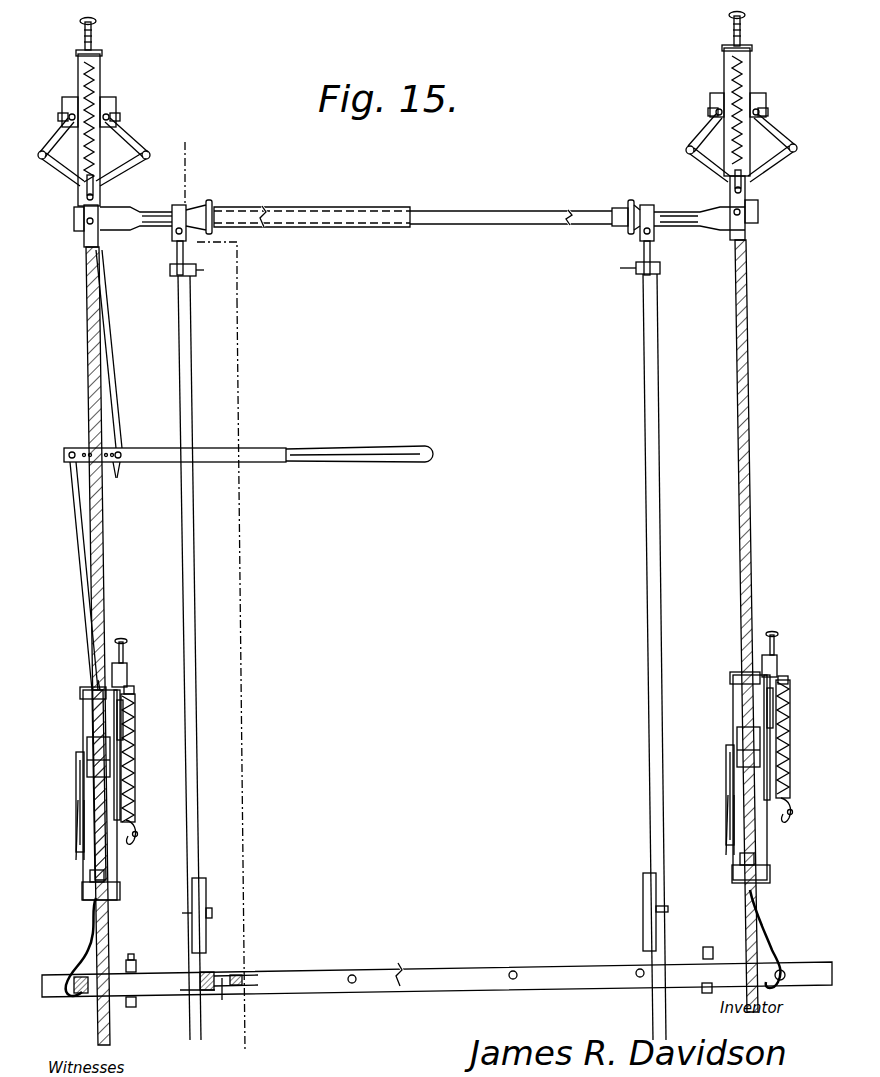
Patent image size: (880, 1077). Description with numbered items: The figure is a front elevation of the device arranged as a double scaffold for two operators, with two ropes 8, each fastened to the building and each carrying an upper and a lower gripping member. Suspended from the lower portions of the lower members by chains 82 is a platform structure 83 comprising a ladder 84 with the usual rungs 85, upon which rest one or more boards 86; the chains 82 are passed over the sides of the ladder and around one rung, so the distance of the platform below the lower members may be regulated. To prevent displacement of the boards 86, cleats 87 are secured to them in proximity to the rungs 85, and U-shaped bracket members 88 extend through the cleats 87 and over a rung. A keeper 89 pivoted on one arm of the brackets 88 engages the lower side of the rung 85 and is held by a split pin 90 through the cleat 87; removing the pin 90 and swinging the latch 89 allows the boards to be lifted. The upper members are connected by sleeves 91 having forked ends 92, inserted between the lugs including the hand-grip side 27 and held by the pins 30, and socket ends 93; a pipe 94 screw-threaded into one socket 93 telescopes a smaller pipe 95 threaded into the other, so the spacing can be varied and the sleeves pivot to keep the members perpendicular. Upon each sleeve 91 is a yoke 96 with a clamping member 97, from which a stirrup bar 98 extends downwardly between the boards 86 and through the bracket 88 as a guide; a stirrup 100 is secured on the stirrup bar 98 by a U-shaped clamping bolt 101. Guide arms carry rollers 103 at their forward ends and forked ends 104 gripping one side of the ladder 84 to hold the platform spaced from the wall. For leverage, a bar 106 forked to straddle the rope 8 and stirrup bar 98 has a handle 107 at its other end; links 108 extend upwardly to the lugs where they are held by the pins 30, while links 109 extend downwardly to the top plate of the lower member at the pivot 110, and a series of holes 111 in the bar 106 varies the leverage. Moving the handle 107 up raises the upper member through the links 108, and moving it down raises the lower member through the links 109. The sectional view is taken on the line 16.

The rope 8 is at (84, 343).
The common pin 16 is at (215, 152).
The side of frame 27 is at (84, 244).
The bolts 30 is at (86, 221).
The chains 82 is at (90, 923).
The platform structure 83 is at (446, 966).
The ladder 84 is at (466, 987).
The rungs 85 is at (354, 974).
The boards 86 is at (158, 973).
The cleats 87 is at (258, 975).
The bracket members 88 is at (208, 972).
The keeper 89 is at (182, 995).
The split pin 90 is at (226, 1000).
The sleeves 91 is at (152, 210).
The forked ends 92 is at (76, 228).
The socket ends 93 is at (205, 210).
The pipe 94 is at (345, 208).
The smaller pipe 95 is at (500, 210).
The yoke 96 is at (172, 236).
The clamping member 97 is at (177, 263).
The stirrup bar 98 is at (196, 272).
The stirrup 100 is at (206, 900).
The U-shaped clamping bolt 101 is at (182, 913).
The rollers 103 is at (130, 956).
The forked ends 104 is at (130, 1007).
The bar 106 is at (266, 448).
The handle 107 is at (400, 450).
The links 108 is at (116, 390).
The links 109 is at (84, 569).
The pivot 110 is at (96, 688).
The holes 111 is at (126, 477).